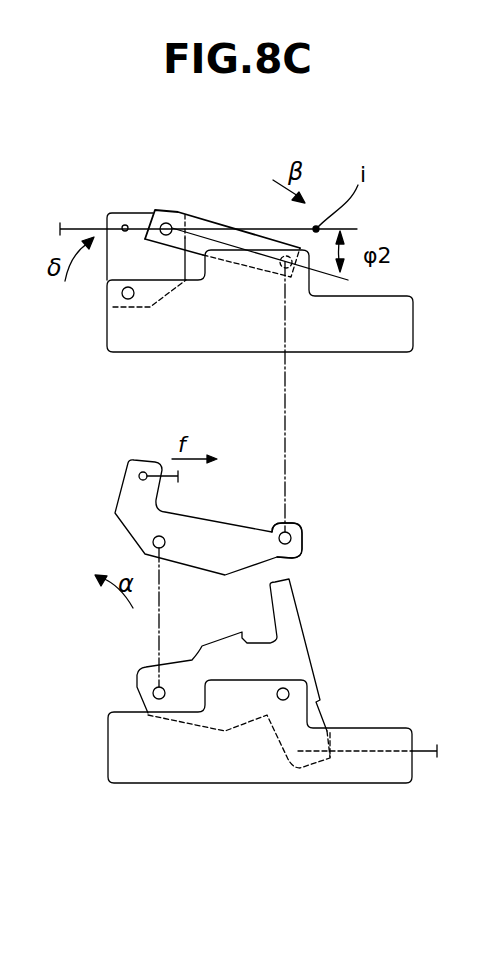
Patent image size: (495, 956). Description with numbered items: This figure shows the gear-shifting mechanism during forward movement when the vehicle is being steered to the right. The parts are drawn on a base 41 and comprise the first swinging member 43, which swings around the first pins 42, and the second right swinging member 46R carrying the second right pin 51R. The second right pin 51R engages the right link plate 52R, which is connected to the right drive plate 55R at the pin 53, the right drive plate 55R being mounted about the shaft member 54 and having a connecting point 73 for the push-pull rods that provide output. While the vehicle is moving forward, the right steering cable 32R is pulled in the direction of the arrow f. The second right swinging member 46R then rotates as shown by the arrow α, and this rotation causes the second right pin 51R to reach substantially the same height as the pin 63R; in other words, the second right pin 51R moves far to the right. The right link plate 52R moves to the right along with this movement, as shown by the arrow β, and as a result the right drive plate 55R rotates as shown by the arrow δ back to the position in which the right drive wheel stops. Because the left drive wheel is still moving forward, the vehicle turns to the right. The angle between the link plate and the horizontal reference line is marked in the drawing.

The base 41 is at (268, 342).
The right drive plate 55R is at (133, 212).
The connecting point 73 is at (123, 225).
The pin 53 is at (166, 222).
The right link plate 52R is at (229, 229).
The shaft member 54 is at (122, 295).
The right steering cable 32R is at (168, 480).
The pin 63R is at (153, 542).
The second right pin 51R is at (292, 537).
The second right swinging member 46R is at (294, 551).
The first swinging member 43 is at (298, 643).
The first pins 42 is at (290, 694).